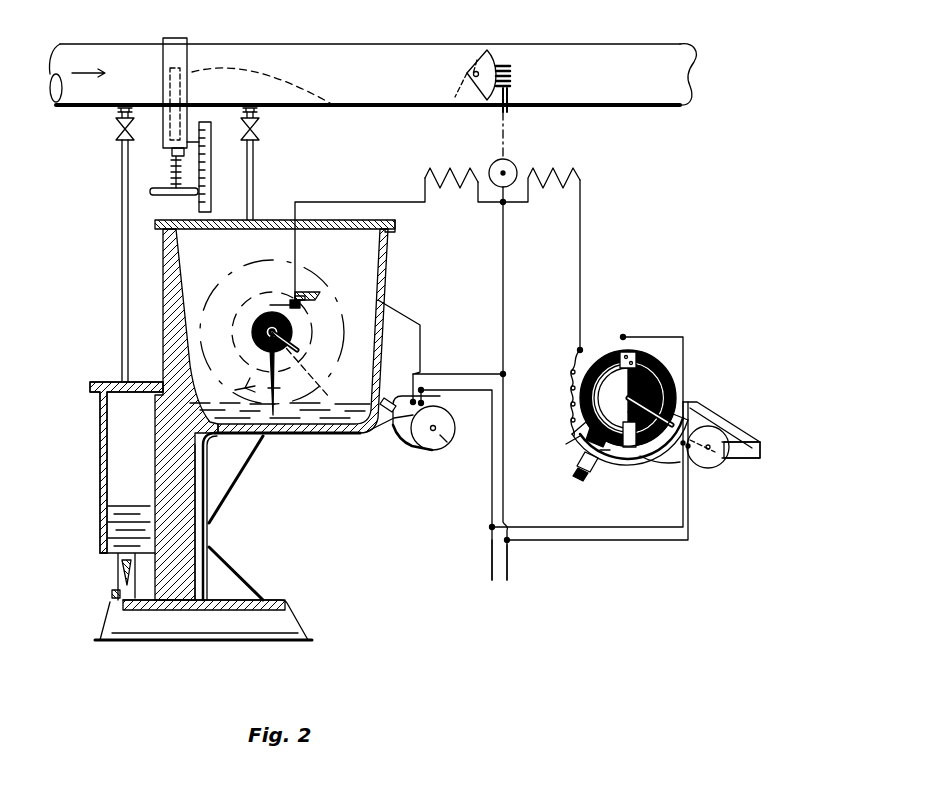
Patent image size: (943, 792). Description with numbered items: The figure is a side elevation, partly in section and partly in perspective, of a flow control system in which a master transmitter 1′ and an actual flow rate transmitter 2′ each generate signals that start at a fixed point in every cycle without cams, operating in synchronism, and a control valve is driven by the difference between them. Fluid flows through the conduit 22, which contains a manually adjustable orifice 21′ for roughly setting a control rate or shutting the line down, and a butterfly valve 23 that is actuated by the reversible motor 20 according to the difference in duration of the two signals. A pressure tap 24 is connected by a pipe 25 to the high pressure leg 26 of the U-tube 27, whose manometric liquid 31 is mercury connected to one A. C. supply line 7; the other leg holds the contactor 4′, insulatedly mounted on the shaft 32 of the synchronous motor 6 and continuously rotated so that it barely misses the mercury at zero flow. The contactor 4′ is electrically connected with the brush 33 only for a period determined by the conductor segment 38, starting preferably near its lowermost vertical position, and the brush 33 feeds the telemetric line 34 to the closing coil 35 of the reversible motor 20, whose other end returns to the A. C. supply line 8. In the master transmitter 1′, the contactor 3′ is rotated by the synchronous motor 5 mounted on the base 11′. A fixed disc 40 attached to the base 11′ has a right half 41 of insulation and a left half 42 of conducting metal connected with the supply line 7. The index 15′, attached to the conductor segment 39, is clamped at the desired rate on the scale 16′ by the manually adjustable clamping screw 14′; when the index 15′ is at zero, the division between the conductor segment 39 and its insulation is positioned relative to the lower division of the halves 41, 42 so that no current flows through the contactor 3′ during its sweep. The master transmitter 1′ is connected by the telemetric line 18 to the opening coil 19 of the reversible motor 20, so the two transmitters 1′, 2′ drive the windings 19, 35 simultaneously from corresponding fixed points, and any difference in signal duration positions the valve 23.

The master transmitter 1′ is at (712, 336).
The actual flow rate transmitter 2′ is at (255, 482).
The contactor 3′ is at (642, 452).
The contactor 4′ is at (312, 428).
The synchronous motor 5 is at (718, 460).
The synchronous motor 6 is at (415, 446).
The A. C. supply line 7 is at (490, 575).
The A. C. supply line 8 is at (510, 575).
The base 11′ is at (736, 426).
The clamping screw 14′ is at (574, 470).
The index 15′ is at (572, 446).
The scale 16′ is at (610, 462).
The telemetric line 18 is at (582, 246).
The opening coil 19 is at (583, 178).
The reversible motor 20 is at (512, 163).
The manually adjustable orifice 21′ is at (190, 70).
The conduit 22 is at (325, 60).
The butterfly valve 23 is at (470, 60).
The pressure tap 24 is at (118, 110).
The pipe 25 is at (122, 278).
The high pressure leg 26 is at (92, 466).
The U-tube 27 is at (160, 380).
The manometric liquid 31 is at (108, 520).
The shaft 32 is at (378, 419).
The brush 33 is at (272, 322).
The telemetric line 34 is at (315, 202).
The closing coil 35 is at (422, 178).
The conductor segment 38 is at (266, 325).
The conductor segment 39 is at (668, 455).
The fixed disc 40 is at (626, 350).
The right half 41 is at (636, 342).
The left half 42 is at (612, 370).